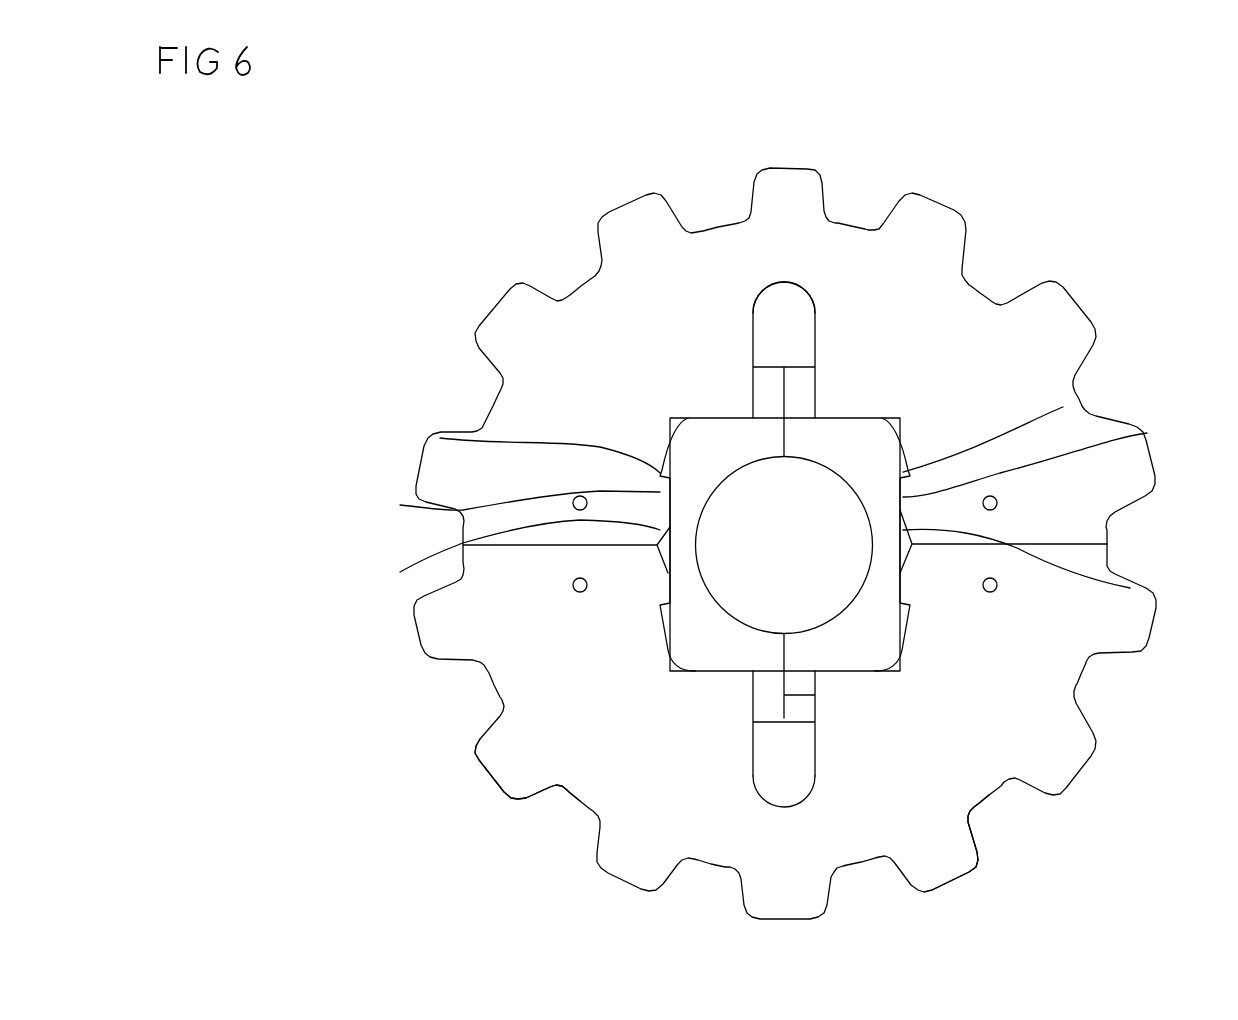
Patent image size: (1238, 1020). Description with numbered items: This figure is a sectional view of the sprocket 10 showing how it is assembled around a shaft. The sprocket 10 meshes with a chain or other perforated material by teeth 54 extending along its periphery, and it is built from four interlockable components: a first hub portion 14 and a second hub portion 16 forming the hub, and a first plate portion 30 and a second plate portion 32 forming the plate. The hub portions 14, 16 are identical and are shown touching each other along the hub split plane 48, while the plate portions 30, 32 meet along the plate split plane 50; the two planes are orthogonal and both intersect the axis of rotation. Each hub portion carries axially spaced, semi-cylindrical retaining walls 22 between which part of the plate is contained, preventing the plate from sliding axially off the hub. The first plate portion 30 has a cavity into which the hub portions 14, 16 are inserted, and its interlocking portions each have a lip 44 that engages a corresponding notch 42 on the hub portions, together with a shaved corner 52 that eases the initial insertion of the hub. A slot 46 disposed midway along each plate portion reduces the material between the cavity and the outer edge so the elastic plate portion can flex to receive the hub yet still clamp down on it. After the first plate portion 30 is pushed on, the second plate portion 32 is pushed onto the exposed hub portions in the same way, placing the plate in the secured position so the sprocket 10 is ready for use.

The sprocket 10 is at (353, 183).
The first hub portion 14 is at (693, 450).
The second hub portion 16 is at (863, 445).
The retaining walls 22 is at (767, 380).
The first plate portion 30 is at (528, 413).
The second plate portion 32 is at (595, 775).
The notch 42 is at (440, 438).
The lip 44 is at (400, 505).
The slot 46 is at (787, 313).
The hub split plane 48 is at (813, 695).
The plate split plane 50 is at (1080, 544).
The shaved corner 52 is at (400, 572).
The teeth 54 is at (953, 870).